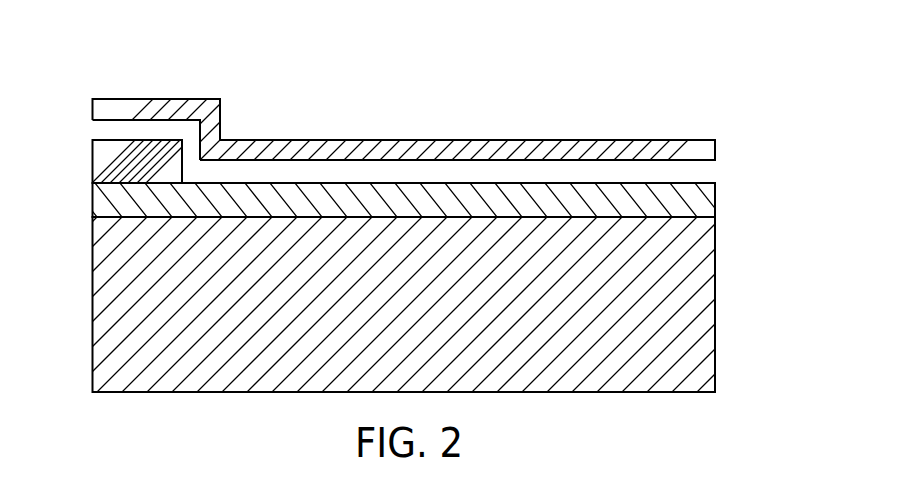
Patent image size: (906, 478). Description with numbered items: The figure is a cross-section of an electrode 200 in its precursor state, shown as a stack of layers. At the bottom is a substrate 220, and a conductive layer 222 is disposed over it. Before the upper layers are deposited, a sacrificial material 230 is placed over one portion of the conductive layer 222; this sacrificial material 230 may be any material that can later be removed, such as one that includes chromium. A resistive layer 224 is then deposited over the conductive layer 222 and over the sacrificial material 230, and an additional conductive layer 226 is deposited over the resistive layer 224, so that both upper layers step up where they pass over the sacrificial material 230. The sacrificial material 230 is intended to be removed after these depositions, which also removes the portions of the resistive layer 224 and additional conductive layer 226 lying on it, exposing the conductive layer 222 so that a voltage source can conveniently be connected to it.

The electrode 200 is at (695, 61).
The substrate 220 is at (700, 320).
The conductive layer 222 is at (102, 210).
The resistive layer 224 is at (447, 170).
The additional conductive layer 226 is at (165, 112).
The sacrificial material 230 is at (102, 165).